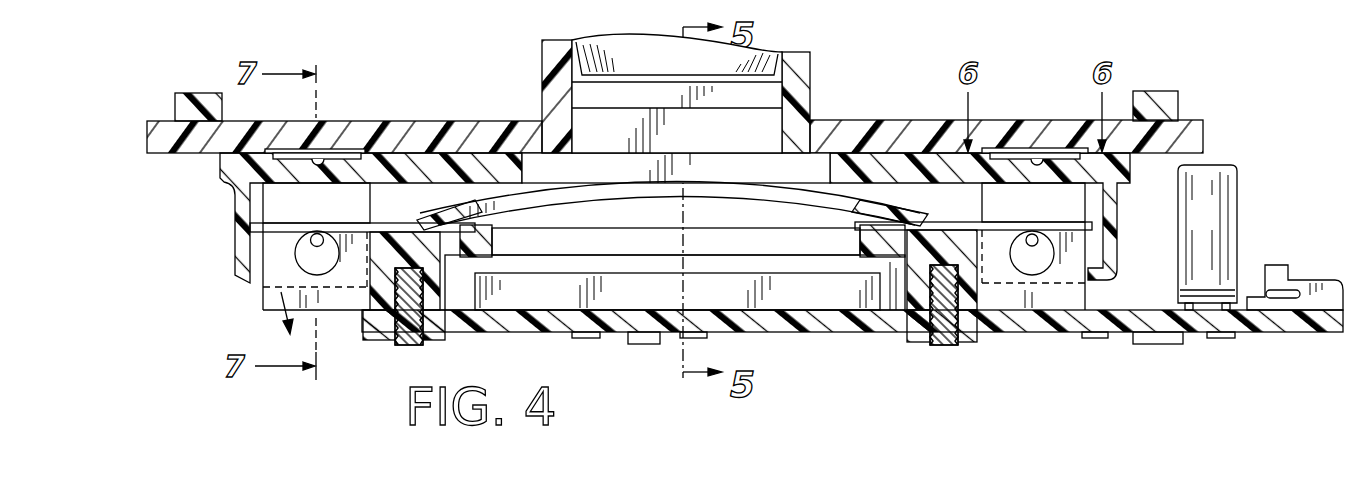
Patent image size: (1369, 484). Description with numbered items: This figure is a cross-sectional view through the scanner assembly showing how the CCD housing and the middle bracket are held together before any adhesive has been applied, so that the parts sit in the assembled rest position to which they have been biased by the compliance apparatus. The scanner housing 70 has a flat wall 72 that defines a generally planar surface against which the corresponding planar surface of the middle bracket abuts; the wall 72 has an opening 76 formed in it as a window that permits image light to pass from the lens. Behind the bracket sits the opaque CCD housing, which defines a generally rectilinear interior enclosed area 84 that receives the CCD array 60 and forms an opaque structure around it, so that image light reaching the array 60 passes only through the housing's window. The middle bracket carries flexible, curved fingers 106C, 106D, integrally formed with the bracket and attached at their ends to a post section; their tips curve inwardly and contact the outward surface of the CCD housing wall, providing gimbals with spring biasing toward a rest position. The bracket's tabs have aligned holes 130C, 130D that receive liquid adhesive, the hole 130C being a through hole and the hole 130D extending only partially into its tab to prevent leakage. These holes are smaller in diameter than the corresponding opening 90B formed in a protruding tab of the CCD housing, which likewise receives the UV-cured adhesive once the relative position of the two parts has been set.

The CCD array 60 is at (810, 302).
The scanner housing 70 is at (150, 130).
The flat wall 72 is at (180, 156).
The opening 76 is at (765, 128).
The interior enclosed area 84 is at (862, 214).
The opening 90B is at (305, 258).
The flexible curved finger 106C is at (930, 202).
The flexible curved finger 106D is at (458, 200).
The hole 130C is at (1068, 297).
The hole 130D is at (280, 245).